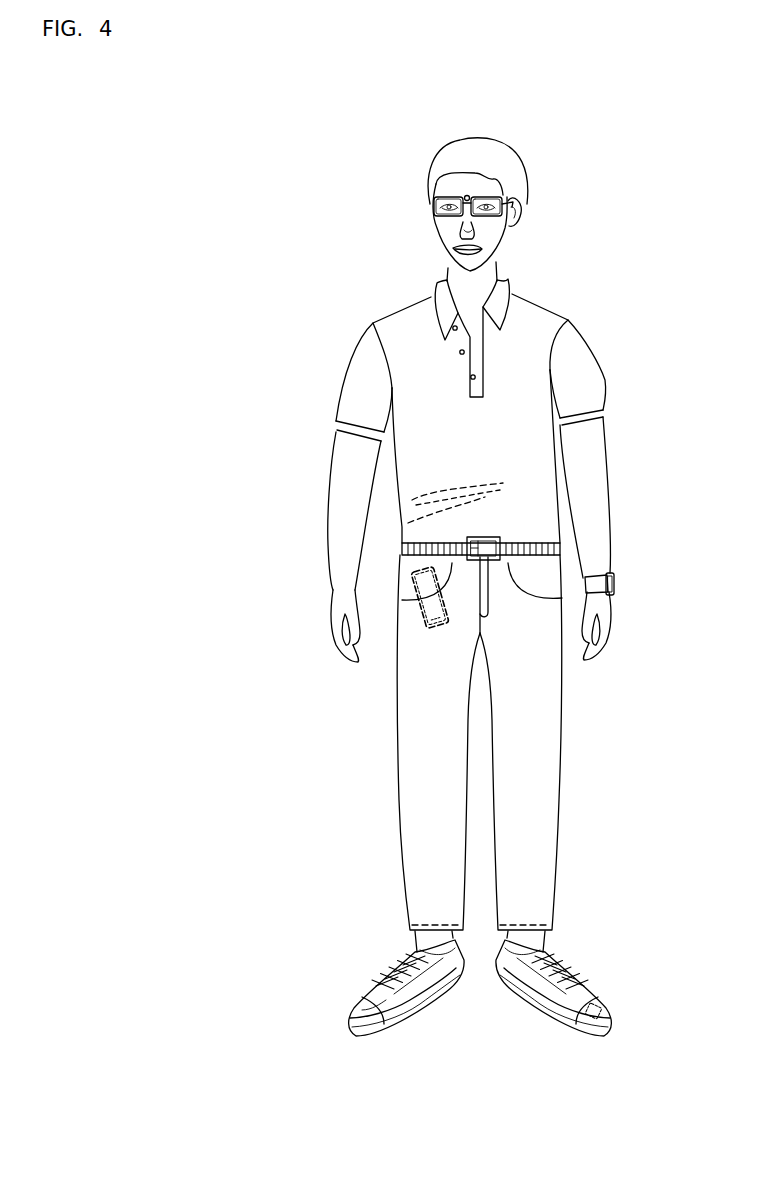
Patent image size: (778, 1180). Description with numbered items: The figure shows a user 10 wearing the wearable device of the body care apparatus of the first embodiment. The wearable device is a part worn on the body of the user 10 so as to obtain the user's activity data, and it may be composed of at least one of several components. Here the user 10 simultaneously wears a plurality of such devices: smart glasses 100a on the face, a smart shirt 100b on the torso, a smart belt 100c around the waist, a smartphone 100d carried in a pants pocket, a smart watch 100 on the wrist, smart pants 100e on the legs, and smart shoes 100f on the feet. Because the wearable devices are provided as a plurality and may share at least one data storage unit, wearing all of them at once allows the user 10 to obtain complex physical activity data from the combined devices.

The user 10 is at (473, 135).
The smart glasses 100a is at (432, 206).
The smart shirt 100b is at (532, 370).
The smart belt 100c is at (498, 540).
The smartphone 100d is at (407, 573).
The smart watch 100 is at (614, 583).
The smart pants 100e is at (543, 755).
The smart shoes 100f is at (608, 1003).